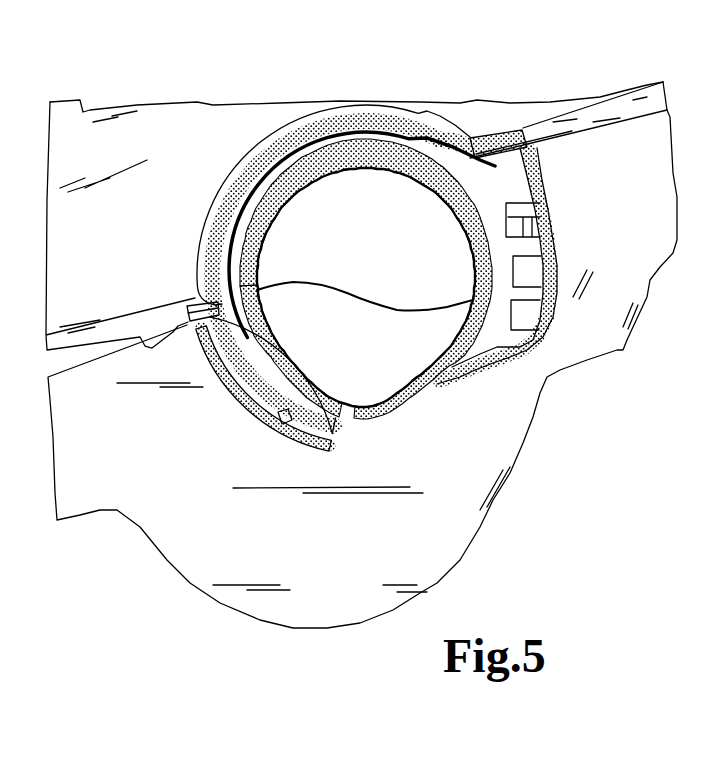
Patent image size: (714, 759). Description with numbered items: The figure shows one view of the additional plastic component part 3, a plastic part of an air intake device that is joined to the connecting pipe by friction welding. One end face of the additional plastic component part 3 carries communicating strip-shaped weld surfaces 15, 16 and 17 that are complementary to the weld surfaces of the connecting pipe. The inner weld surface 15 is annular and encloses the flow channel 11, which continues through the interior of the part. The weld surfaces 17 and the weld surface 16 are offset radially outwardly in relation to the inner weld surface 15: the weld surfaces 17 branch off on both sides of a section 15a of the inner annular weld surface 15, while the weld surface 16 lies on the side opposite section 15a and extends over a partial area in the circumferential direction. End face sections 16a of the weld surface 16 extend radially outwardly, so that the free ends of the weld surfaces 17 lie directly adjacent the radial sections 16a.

The additional plastic component part 3 is at (230, 150).
The flow channel 11 is at (372, 243).
The inner weld surface 15 is at (289, 383).
The section of the inner annular weld surface 15a is at (447, 370).
The weld surface 16 is at (301, 133).
The end face section 16a is at (505, 132).
The weld surface 17 is at (178, 313).